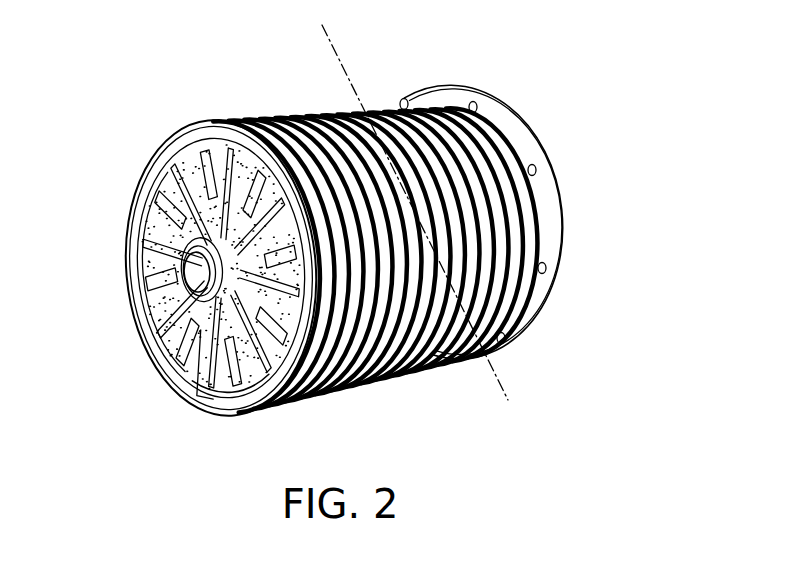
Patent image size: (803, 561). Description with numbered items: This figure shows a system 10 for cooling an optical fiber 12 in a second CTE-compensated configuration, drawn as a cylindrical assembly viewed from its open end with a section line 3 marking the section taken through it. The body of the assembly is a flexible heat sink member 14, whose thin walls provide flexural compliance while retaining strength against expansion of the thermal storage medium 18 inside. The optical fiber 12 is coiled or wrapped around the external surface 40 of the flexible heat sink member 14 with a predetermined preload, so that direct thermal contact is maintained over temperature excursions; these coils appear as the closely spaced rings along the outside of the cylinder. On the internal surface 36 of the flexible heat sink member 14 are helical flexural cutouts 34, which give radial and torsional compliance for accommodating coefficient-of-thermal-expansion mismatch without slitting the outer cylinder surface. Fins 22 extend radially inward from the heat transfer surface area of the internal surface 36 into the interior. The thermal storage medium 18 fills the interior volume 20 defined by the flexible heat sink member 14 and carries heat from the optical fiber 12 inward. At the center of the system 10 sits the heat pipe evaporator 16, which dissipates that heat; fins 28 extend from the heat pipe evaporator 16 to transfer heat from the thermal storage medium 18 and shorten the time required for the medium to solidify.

The system 10 is at (524, 70).
The optical fiber 12 is at (386, 358).
The flexible heat sink member 14 is at (306, 118).
The heat pipe evaporator 16 is at (165, 262).
The thermal storage medium 18 is at (188, 372).
The interior volume 20 is at (200, 124).
The fins 22 is at (136, 184).
The fins 28 is at (260, 372).
The flexural cutouts 34 is at (170, 290).
The internal surface 36 is at (152, 325).
The external surface 40 is at (447, 332).
The section line 3- 3 is at (322, 25).